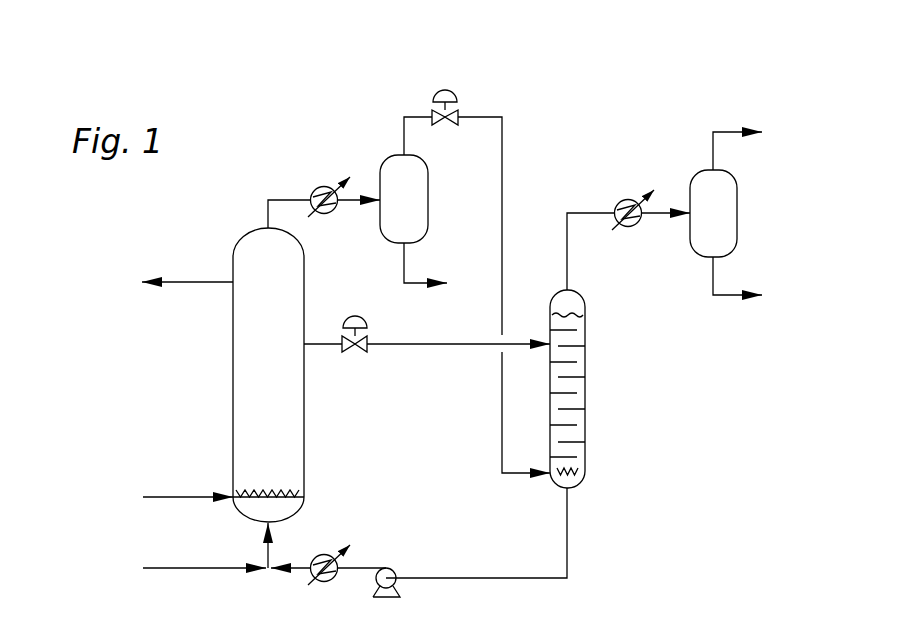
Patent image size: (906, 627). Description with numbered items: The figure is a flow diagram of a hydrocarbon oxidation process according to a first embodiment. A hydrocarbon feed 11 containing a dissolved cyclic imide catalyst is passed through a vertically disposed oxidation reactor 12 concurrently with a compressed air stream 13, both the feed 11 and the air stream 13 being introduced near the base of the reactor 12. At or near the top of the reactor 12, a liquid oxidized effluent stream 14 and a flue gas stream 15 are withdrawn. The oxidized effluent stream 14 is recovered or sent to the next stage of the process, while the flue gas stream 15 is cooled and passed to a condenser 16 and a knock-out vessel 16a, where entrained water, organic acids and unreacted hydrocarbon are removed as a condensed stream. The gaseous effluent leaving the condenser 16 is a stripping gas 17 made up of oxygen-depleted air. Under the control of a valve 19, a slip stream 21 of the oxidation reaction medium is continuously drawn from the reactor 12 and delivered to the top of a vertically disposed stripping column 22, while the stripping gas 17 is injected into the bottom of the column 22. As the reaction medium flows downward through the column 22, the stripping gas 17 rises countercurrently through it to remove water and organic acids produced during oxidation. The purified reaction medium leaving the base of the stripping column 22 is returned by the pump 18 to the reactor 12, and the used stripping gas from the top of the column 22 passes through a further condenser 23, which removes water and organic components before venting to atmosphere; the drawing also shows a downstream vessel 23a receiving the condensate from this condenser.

The hydrocarbon feed 11 is at (188, 568).
The oxidation reactor 12 is at (304, 446).
The compressed air stream 13 is at (165, 497).
The liquid oxidized effluent stream 14 is at (190, 283).
The flue gas stream 15 is at (287, 200).
The condenser 16 is at (325, 186).
The knock-out vessel 16a is at (428, 188).
The stripping gas 17 is at (502, 190).
The pump 18 is at (390, 568).
The valve 19 is at (355, 352).
The slip stream 21 is at (455, 345).
The stripping column 22 is at (585, 385).
The further condenser 23 is at (628, 199).
The separator drum 23a is at (737, 205).